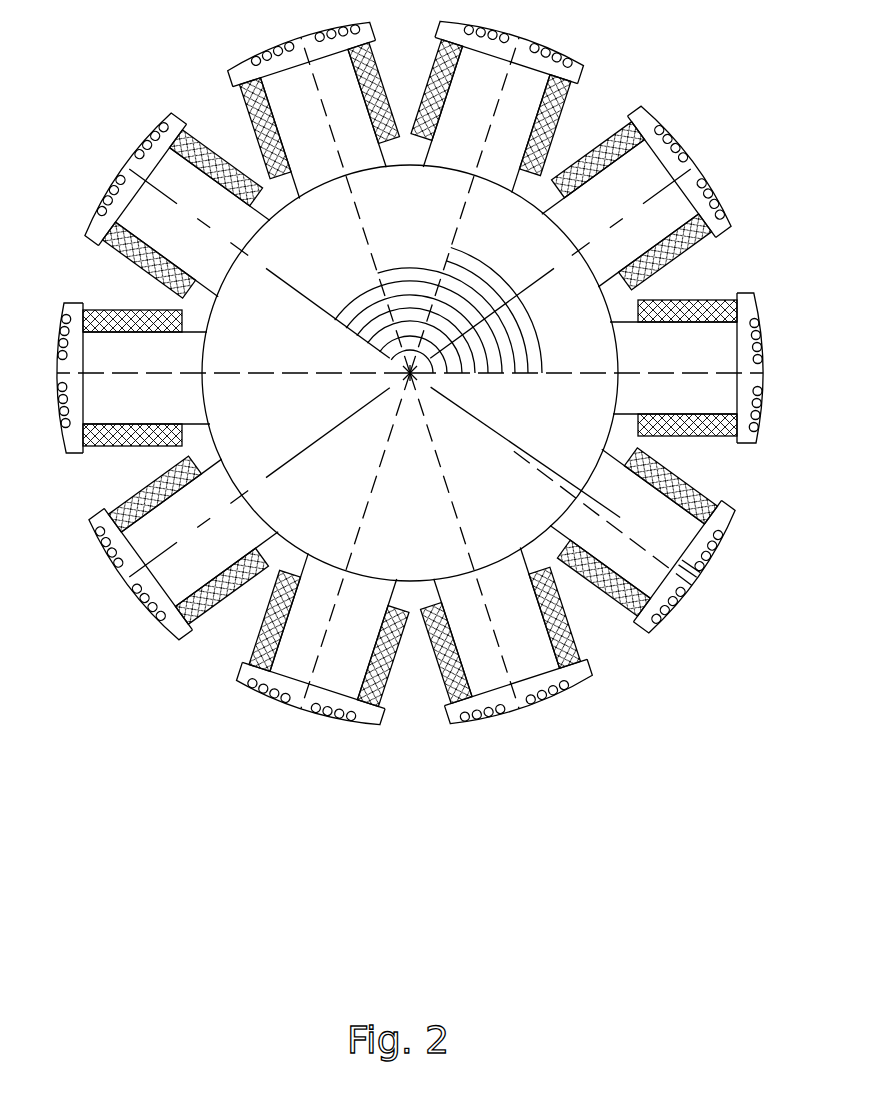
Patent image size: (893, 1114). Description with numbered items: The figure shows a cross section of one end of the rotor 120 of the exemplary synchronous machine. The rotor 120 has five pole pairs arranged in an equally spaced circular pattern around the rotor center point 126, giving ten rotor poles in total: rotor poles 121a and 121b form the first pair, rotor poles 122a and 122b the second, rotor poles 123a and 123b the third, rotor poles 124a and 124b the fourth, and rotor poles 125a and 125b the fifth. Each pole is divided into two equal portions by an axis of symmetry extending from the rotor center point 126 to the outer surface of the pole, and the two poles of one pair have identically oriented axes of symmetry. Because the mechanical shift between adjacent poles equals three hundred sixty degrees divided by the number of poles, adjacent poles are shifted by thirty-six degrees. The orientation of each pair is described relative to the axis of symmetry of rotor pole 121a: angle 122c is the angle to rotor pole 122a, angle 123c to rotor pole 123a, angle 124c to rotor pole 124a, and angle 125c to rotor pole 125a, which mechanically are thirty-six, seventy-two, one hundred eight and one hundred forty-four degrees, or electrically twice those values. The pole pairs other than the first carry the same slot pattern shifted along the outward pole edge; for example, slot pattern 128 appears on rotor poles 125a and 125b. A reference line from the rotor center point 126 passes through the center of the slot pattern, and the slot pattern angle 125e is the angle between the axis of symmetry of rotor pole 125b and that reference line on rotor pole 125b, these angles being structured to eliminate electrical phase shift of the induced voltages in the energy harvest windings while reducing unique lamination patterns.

The rotor 120 is at (624, 86).
The rotor pole 121a is at (717, 363).
The rotor pole 121b is at (156, 403).
The rotor pole 122a is at (632, 208).
The rotor pole 122b is at (231, 556).
The rotor pole 123a is at (489, 138).
The rotor pole 123b is at (379, 640).
The rotor pole 124a is at (331, 135).
The rotor pole 124b is at (547, 641).
The rotor pole 125a is at (201, 248).
The rotor pole 125b is at (652, 505).
The angle 122c is at (534, 319).
The angle 123c is at (493, 283).
The angle 124c is at (405, 270).
The angle 125c is at (338, 307).
The slot pattern angle 125e is at (632, 531).
The rotor center point 126 is at (418, 381).
The slot pattern 128 is at (700, 560).